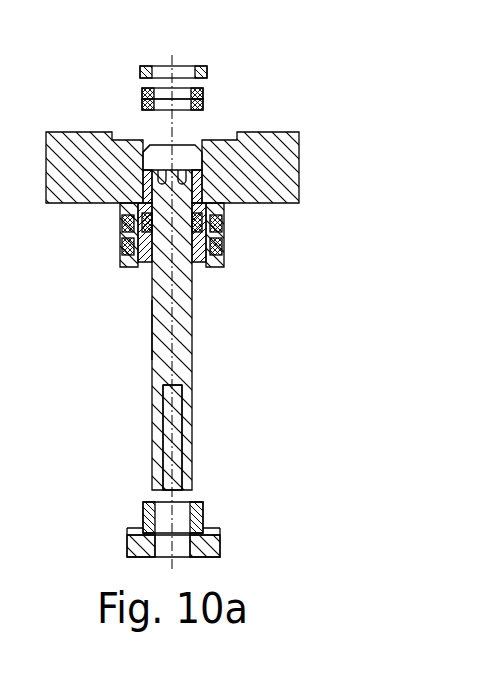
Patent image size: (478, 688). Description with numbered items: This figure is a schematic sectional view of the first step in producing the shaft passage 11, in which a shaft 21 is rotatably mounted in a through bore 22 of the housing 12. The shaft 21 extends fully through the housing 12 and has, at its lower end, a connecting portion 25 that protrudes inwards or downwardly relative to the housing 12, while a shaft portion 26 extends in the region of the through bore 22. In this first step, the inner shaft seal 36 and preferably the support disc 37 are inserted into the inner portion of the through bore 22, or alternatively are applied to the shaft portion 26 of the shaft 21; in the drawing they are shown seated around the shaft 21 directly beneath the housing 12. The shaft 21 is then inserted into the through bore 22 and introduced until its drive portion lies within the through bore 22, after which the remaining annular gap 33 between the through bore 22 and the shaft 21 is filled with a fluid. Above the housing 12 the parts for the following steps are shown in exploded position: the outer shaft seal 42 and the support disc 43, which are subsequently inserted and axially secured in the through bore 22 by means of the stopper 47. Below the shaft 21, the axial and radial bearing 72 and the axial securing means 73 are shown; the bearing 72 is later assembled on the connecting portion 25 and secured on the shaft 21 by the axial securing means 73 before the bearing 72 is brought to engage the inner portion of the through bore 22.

The shaft passage 11 is at (262, 72).
The housing 12 is at (283, 108).
The shaft 21 is at (198, 343).
The through bore 22 is at (147, 170).
The connecting portion 25 is at (205, 442).
The shaft portion 26 is at (152, 329).
The annular gap 33 is at (118, 235).
The inner shaft seal 36 is at (225, 250).
The support disc 37 is at (222, 220).
The outer shaft seal 42 is at (142, 103).
The support disc 43 is at (142, 93).
The stopper 47 is at (140, 72).
The axial and radial bearing 72 is at (215, 517).
The axial securing means 73 is at (215, 542).